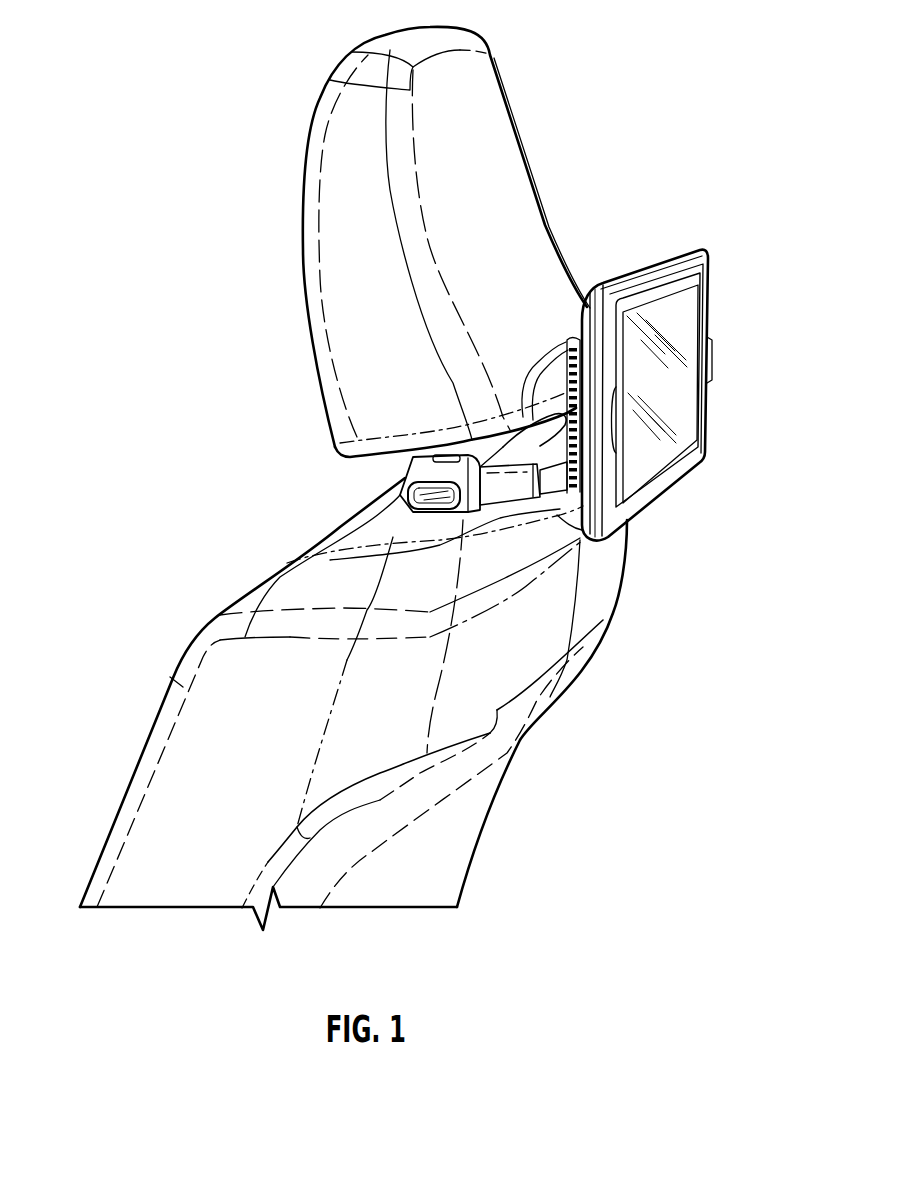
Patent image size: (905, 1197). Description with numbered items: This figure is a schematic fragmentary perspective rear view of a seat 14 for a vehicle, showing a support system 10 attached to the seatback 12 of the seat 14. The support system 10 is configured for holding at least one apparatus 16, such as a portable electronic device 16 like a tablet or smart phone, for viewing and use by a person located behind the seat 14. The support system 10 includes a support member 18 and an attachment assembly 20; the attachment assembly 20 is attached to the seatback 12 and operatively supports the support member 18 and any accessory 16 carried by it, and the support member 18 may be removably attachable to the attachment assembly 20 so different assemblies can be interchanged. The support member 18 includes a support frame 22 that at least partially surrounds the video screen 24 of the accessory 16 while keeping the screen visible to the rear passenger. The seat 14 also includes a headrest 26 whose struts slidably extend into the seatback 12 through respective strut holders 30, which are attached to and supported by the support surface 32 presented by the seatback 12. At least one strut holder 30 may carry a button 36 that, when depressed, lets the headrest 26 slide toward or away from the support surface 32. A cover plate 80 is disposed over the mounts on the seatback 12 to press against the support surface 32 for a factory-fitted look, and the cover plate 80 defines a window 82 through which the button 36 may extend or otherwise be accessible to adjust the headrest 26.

The support system 10 is at (407, 350).
The seatback 12 is at (263, 597).
The seat 14 is at (108, 52).
The portable electronic device 16 is at (690, 305).
The support member 18 is at (633, 272).
The attachment assembly 20 is at (404, 481).
The support frame 22 is at (705, 272).
The video screen 24 is at (688, 402).
The headrest 26 is at (312, 200).
The strut holder 30 is at (463, 485).
The support surface 32 is at (368, 528).
The button 36 is at (415, 508).
The cover plate 80 is at (460, 510).
The window 82 is at (430, 470).